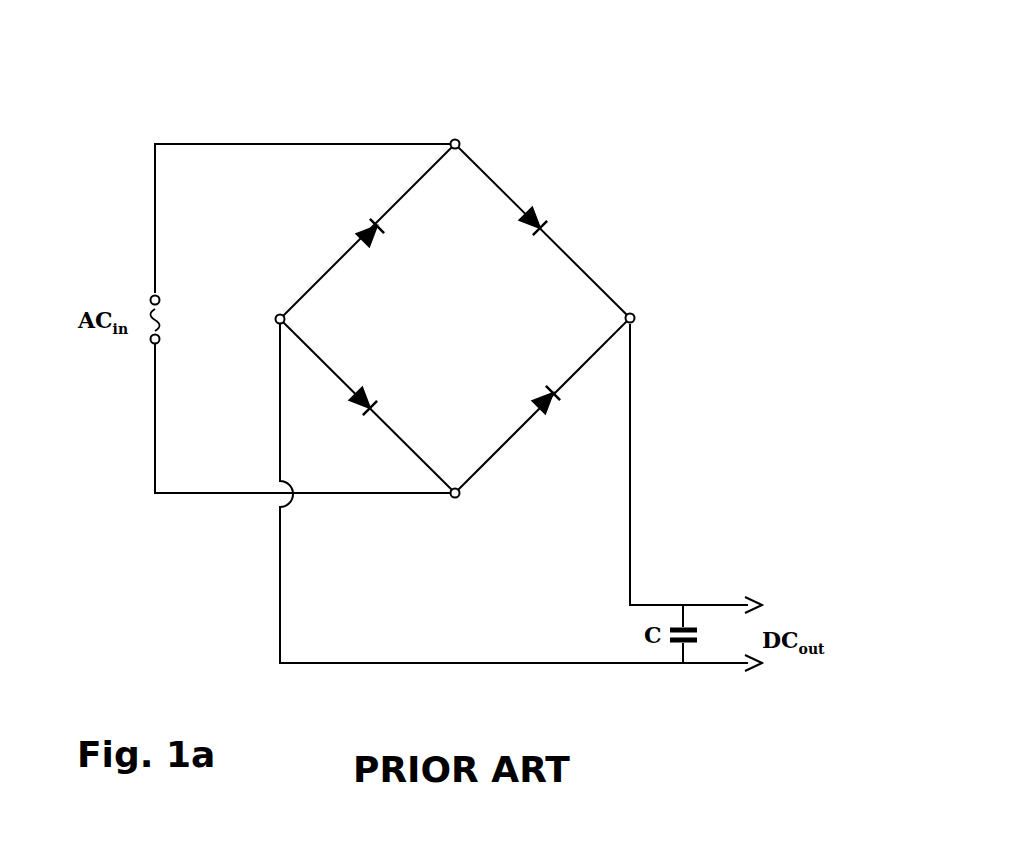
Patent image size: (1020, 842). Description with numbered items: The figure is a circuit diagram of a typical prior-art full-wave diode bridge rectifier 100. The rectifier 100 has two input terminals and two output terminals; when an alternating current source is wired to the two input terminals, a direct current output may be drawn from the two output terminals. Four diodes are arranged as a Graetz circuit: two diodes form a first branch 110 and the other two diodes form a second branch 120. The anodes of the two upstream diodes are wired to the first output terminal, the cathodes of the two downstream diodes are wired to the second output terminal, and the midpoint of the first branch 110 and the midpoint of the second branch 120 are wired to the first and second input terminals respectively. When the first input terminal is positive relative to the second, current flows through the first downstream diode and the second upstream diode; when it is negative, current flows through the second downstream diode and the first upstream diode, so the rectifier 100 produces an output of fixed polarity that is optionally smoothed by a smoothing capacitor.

The full-wave rectifier 100 is at (482, 285).
The first branch 110 is at (627, 221).
The second branch 120 is at (502, 475).